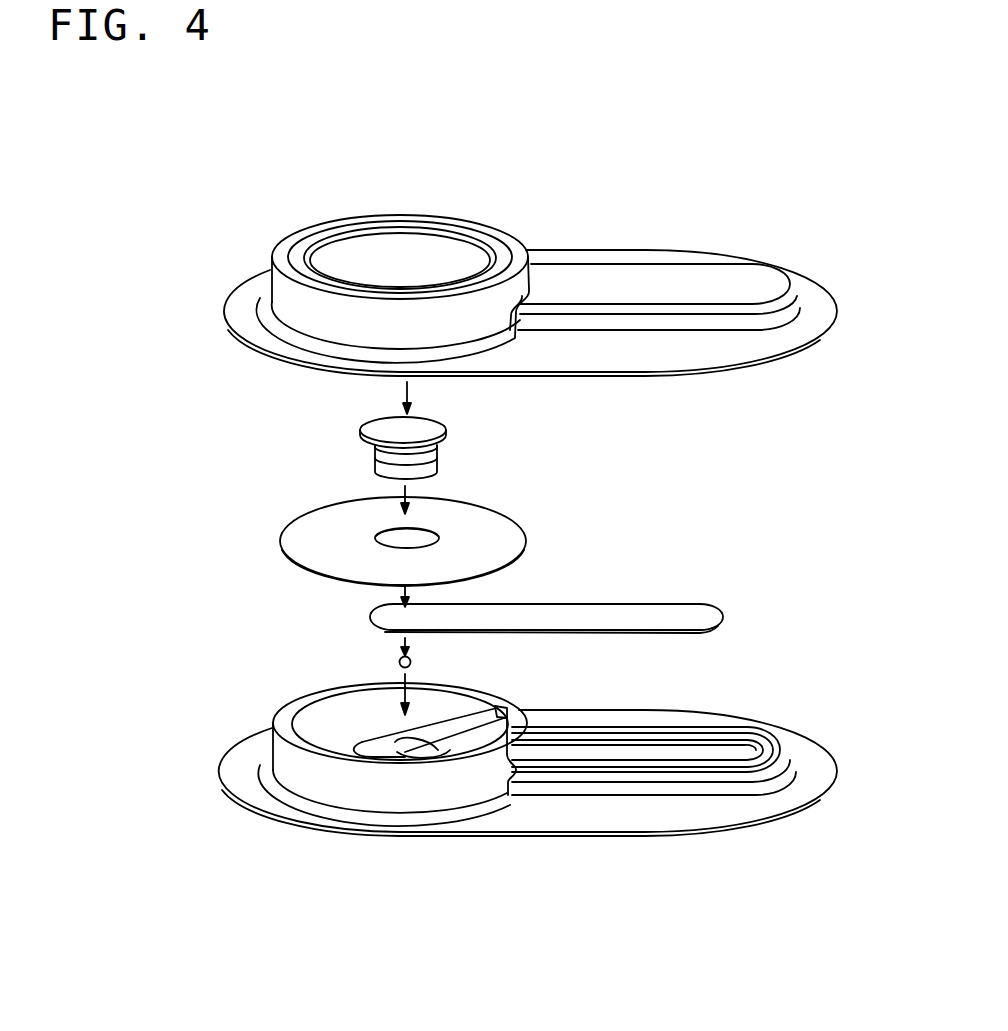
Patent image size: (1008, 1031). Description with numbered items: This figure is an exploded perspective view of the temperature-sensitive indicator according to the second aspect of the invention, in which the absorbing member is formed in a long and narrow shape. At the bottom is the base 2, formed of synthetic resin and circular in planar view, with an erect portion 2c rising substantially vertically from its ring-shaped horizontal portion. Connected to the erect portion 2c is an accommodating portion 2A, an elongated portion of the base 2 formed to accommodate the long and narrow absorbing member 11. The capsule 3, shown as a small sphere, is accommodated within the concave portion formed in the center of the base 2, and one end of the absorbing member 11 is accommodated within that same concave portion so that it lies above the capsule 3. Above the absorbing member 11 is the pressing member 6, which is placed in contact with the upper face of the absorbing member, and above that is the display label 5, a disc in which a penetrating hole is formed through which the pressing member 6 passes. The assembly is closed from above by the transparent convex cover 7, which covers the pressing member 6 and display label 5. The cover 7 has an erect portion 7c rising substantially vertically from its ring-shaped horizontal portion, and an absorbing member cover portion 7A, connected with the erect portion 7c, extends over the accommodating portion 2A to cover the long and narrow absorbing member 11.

The cover 7 is at (530, 301).
The absorbing member cover portion 7A is at (740, 280).
The erect portion 7c is at (497, 323).
The pressing member 6 is at (437, 432).
The display label 5 is at (503, 538).
The absorbing member 11 is at (703, 612).
The capsule 3 is at (398, 662).
The base 2 is at (504, 750).
The accommodating portion 2A is at (763, 747).
The erect portion 2c is at (290, 766).